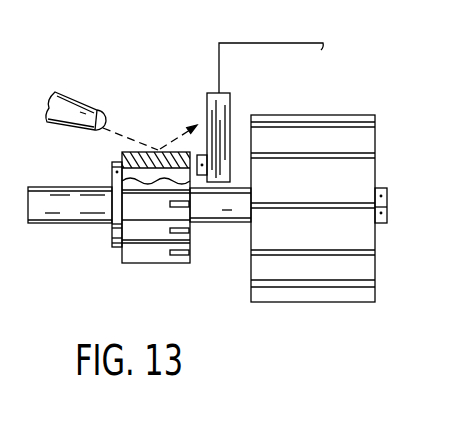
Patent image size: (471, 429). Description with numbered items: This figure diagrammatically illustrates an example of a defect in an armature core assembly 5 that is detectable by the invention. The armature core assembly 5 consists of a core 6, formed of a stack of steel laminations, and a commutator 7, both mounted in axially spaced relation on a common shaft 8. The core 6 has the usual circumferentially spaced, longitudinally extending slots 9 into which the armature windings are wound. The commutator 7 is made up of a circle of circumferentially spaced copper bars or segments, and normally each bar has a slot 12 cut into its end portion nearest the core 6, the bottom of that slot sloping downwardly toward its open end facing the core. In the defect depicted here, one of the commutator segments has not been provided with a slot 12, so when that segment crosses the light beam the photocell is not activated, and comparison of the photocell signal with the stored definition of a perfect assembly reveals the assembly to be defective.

The armature core assembly 5 is at (223, 179).
The core 6 is at (330, 138).
The commutator 7 is at (156, 214).
The shaft 8 is at (250, 199).
The slots 9 is at (389, 208).
The slot 12 is at (190, 232).